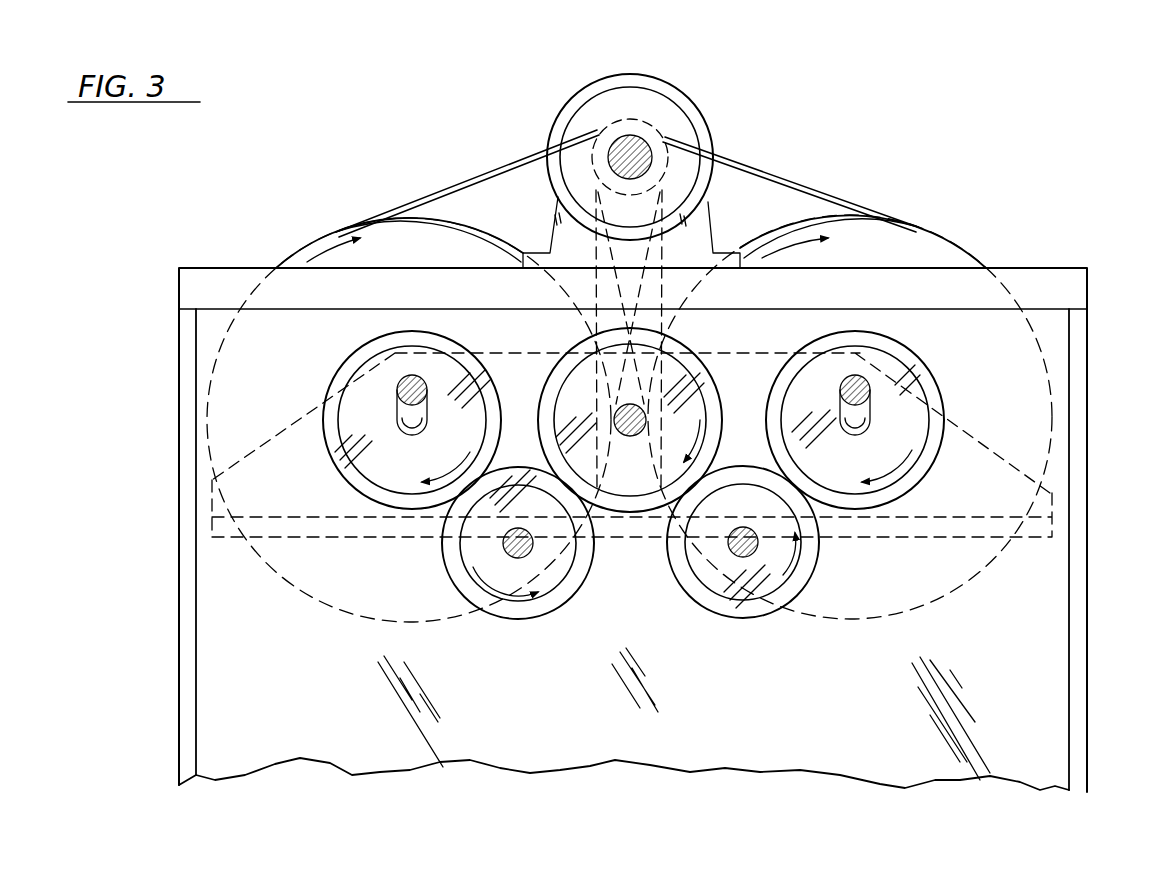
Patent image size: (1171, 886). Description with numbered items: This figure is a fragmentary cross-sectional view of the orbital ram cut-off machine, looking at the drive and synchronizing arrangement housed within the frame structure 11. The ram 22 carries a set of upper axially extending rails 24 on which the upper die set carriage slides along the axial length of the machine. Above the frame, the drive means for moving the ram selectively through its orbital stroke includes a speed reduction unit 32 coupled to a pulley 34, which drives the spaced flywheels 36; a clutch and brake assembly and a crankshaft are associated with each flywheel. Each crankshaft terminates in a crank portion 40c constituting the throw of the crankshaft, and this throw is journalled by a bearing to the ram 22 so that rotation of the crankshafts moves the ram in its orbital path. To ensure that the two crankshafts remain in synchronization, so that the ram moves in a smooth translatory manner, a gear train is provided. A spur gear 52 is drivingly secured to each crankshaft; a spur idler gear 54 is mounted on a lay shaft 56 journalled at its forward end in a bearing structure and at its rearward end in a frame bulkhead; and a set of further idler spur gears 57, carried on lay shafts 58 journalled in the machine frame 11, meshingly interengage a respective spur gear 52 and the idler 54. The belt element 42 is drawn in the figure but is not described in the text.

The frame structure 11 is at (1088, 560).
The ram 22 is at (257, 450).
The upper axially extending rails 24 is at (632, 547).
The speed reduction unit 32 is at (586, 86).
The pulley 34 is at (678, 138).
The flywheels 36 is at (284, 262).
The crank portion 40c is at (427, 388).
The belt 42 is at (450, 186).
The spur gear 52 is at (328, 393).
The spur idler gear 54 is at (712, 392).
The lay shaft 56 is at (629, 437).
The further idler spur gears 57 is at (520, 620).
The lay shafts 58 is at (735, 533).